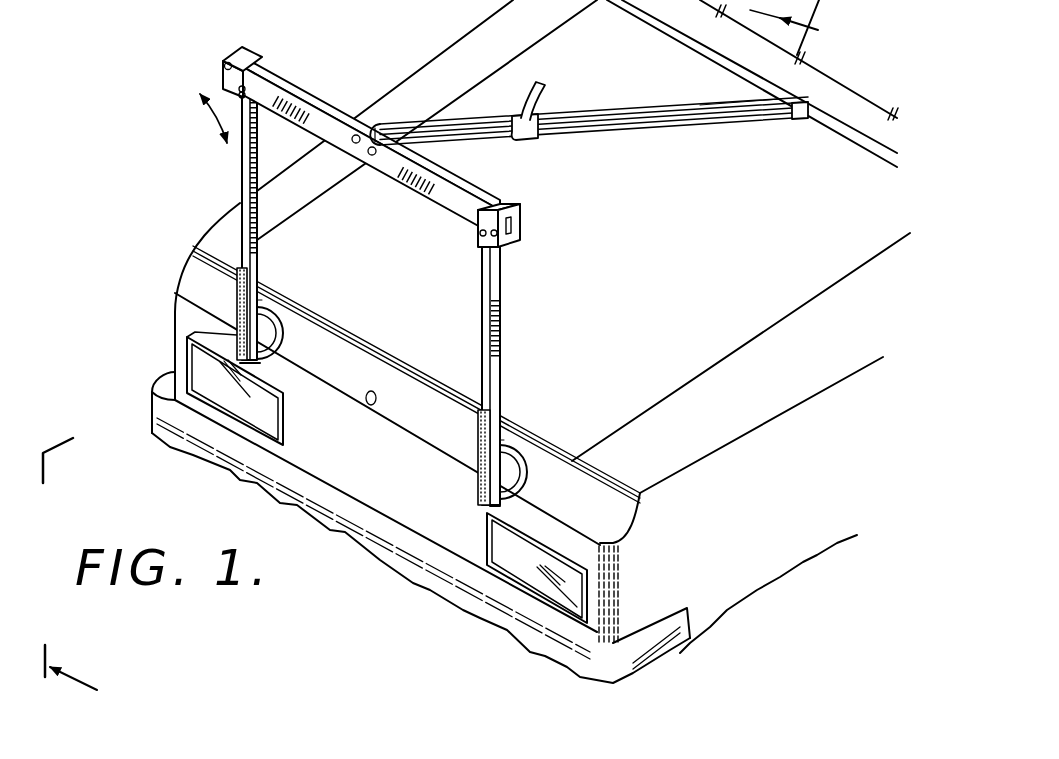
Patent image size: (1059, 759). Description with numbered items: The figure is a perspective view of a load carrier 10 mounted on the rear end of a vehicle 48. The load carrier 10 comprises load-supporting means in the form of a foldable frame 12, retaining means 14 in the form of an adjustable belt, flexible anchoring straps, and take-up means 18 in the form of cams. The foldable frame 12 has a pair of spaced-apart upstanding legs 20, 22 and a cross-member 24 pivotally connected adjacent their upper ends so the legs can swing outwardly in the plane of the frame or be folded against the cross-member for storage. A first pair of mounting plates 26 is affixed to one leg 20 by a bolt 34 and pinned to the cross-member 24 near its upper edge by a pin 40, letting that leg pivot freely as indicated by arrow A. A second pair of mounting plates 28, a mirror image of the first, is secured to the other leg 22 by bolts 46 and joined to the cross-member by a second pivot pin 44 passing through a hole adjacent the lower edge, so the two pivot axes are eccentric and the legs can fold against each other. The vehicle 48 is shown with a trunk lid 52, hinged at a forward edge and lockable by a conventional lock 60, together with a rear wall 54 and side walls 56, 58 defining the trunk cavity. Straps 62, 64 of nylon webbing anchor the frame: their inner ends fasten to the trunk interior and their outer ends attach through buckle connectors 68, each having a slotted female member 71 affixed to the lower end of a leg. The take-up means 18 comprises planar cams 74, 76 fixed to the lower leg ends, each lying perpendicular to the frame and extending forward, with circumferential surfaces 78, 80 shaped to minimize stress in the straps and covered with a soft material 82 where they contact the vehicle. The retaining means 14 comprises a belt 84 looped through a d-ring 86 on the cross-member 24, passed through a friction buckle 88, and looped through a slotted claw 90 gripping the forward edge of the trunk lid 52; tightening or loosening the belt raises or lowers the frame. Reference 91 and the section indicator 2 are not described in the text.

The load carrier 10 is at (238, 225).
The foldable frame 12 is at (221, 76).
The retaining means 14 is at (578, 108).
The take-up means 18 is at (284, 320).
The frame leg 20 is at (241, 172).
The frame leg 22 is at (501, 357).
The cross-member 24 is at (322, 101).
The mounting plates 26 is at (250, 49).
The mounting plates 28 is at (504, 208).
The bolt 34 is at (257, 102).
The pin 40 is at (227, 63).
The second pivot pin 44 is at (496, 236).
The bolts 46 is at (480, 236).
The vehicle 48 is at (815, 562).
The trunk lid 52 is at (752, 128).
The rear wall 54 is at (418, 507).
The side wall 56 is at (443, 50).
The side wall 58 is at (741, 388).
The lock 60 is at (367, 405).
The strap 62 is at (197, 333).
The strap 64 is at (477, 480).
The buckle connector 68 is at (236, 291).
The slotted female member 71 is at (236, 296).
The cam 74 is at (258, 308).
The cam 76 is at (505, 456).
The circumferential surface 78 is at (260, 298).
The circumferential surface 80 is at (507, 443).
The soft material 82 is at (287, 340).
The belt 84 is at (683, 93).
The d-ring 86 is at (398, 116).
The friction buckle 88 is at (524, 139).
The slotted claw 90 is at (804, 120).
The locking tab 91 is at (542, 84).
The arrow A is at (203, 120).
The section line 2- 2 is at (444, 357).